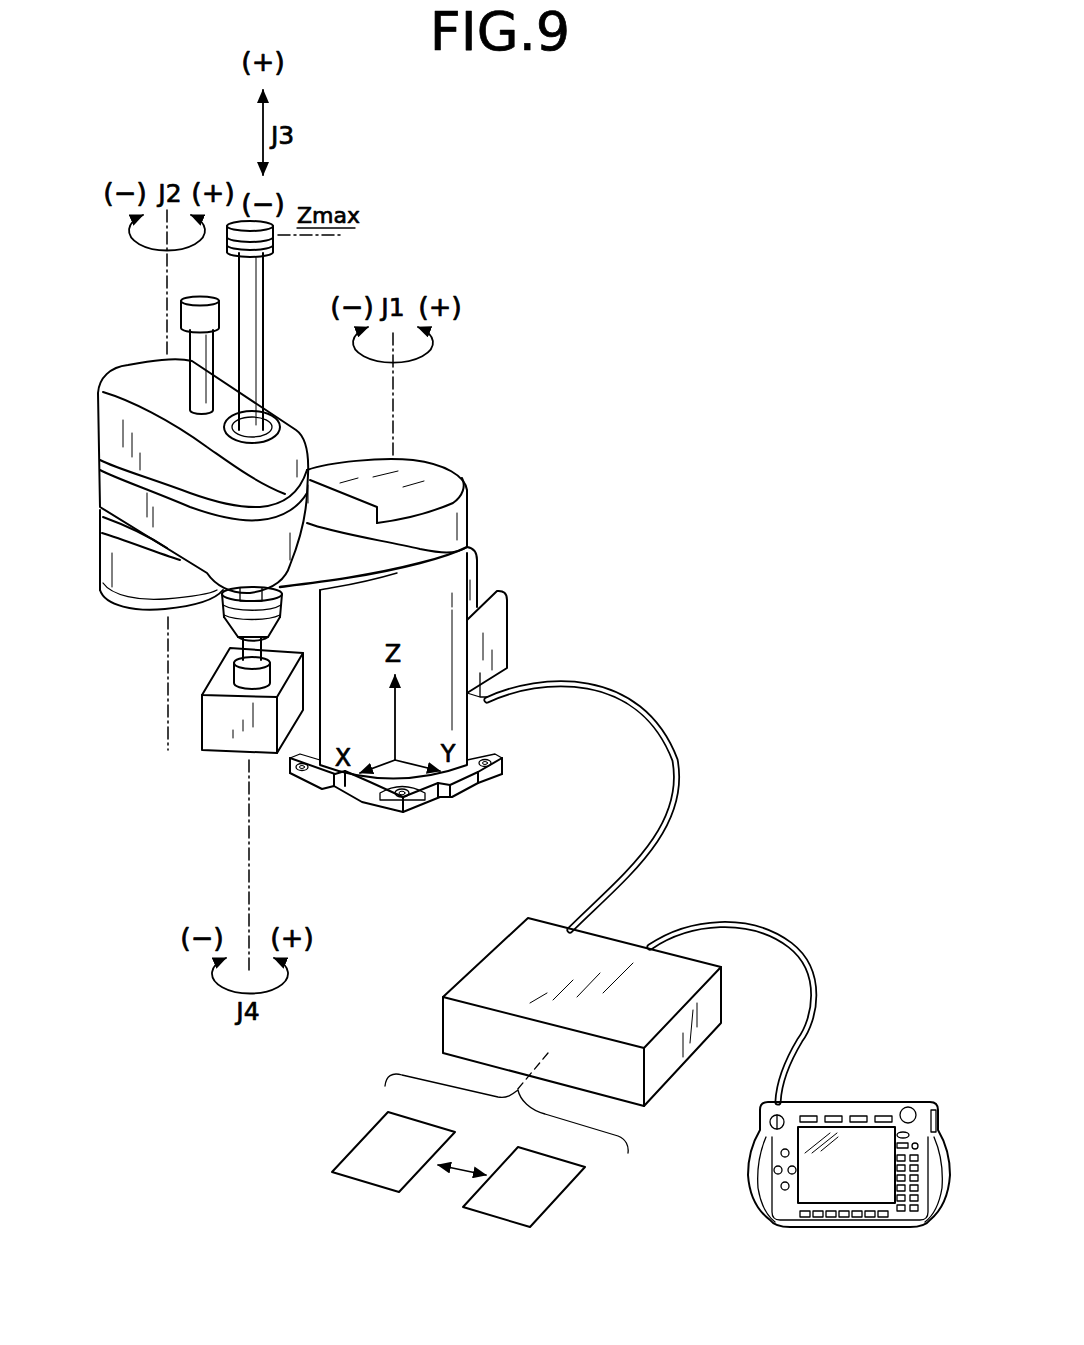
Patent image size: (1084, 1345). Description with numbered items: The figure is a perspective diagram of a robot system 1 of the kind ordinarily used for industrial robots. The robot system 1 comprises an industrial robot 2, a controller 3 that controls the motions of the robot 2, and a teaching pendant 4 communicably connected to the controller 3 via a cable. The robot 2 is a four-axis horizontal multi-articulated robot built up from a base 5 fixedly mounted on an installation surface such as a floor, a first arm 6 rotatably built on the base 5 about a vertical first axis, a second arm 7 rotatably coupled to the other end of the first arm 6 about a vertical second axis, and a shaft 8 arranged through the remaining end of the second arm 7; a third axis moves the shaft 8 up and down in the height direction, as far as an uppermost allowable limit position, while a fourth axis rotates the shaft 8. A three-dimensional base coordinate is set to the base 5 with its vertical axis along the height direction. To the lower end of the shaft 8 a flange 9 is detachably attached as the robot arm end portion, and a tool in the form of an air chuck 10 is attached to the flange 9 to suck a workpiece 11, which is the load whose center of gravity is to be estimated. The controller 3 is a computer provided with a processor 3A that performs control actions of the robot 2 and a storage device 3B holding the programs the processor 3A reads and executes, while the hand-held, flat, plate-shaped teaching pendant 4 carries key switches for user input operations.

The robot system 1 is at (473, 150).
The industrial robot 2 is at (392, 238).
The controller 3 is at (487, 958).
The processor 3A is at (380, 1165).
The storage device 3B is at (505, 1205).
The teaching pendant 4 is at (873, 1100).
The base 5 is at (322, 632).
The first arm 6 is at (470, 512).
The second arm 7 is at (99, 395).
The shaft 8 is at (264, 350).
The flange 9 is at (283, 605).
The air chuck 10 is at (232, 673).
The workpiece 11 is at (226, 742).